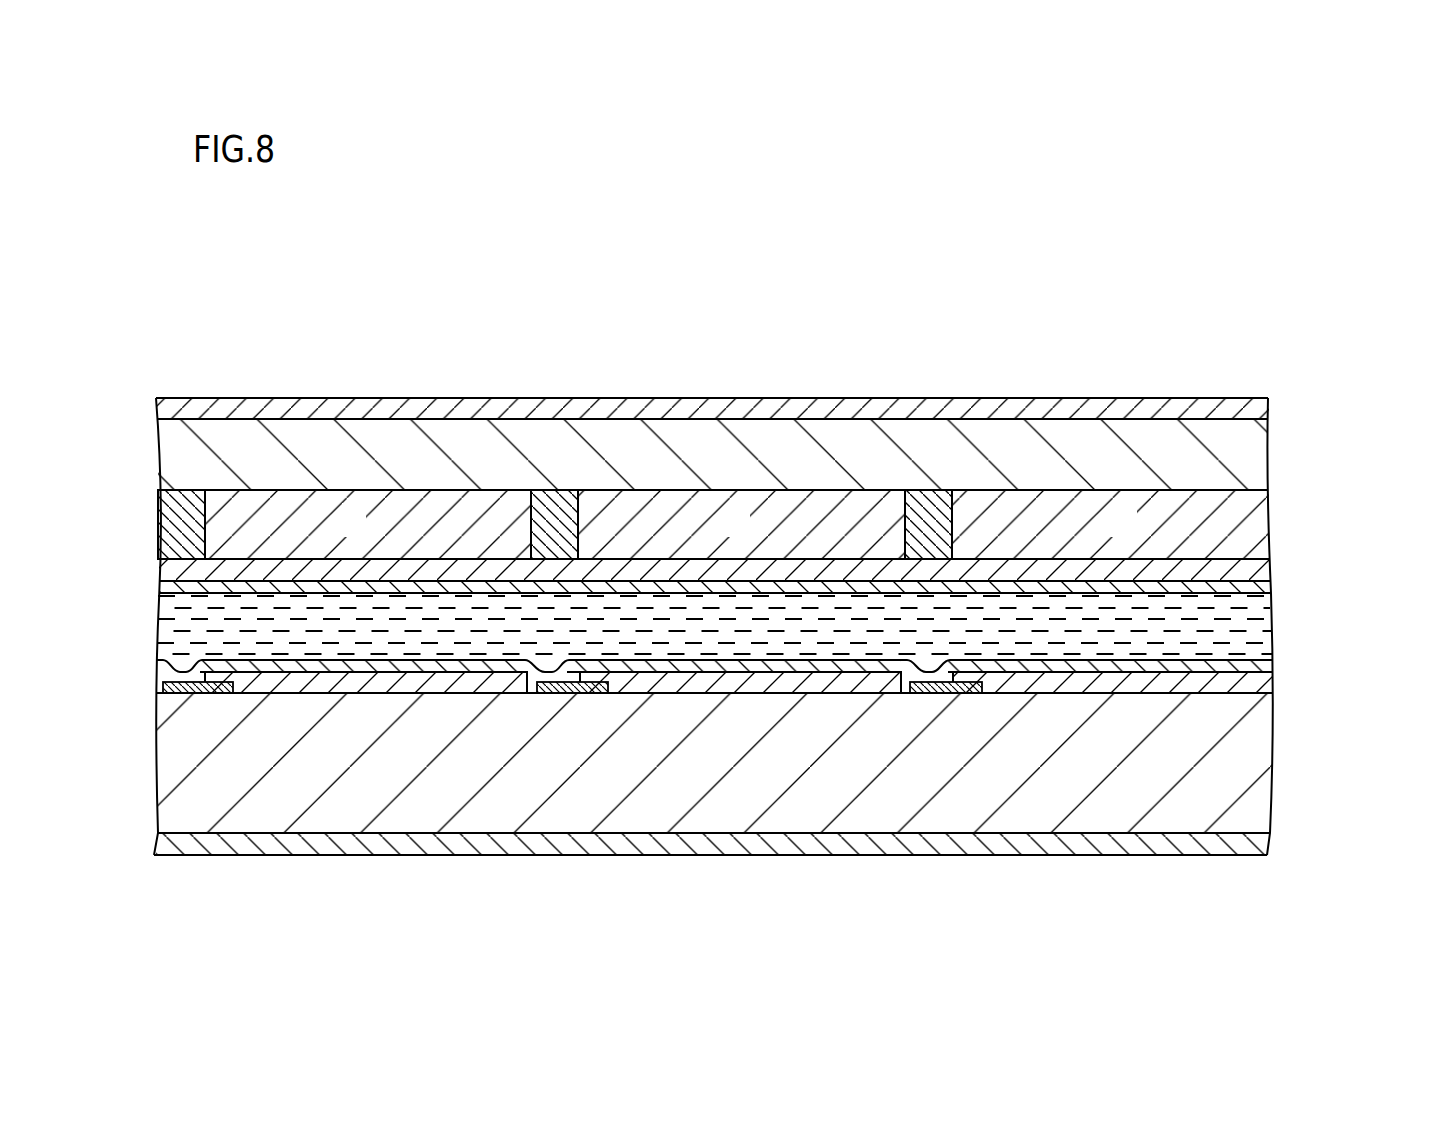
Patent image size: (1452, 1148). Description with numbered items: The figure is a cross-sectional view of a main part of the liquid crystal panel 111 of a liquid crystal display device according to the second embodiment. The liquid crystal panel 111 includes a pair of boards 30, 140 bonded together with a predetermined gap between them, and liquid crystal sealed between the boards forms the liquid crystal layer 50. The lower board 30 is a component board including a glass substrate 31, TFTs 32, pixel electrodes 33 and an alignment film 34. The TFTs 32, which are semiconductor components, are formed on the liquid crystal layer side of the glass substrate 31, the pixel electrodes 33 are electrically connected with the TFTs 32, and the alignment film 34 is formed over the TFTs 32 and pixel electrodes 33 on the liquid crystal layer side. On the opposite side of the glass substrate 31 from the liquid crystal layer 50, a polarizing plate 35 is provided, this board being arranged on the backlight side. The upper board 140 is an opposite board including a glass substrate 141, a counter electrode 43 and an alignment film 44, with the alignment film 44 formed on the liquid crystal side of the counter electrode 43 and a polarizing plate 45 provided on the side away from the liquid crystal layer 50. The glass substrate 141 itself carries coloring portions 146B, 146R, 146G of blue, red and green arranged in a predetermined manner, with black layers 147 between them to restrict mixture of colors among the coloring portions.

The liquid crystal panel 111 is at (1176, 381).
The board 140 is at (1384, 448).
The glass substrate 141 is at (1285, 487).
The polarizing plate 45 is at (1245, 413).
The coloring portion 146B is at (320, 510).
The coloring portion 146R is at (693, 508).
The coloring portion 146G is at (1077, 508).
The black layer 147 is at (555, 510).
The counter electrode 43 is at (1255, 573).
The alignment film 44 is at (1257, 590).
The liquid crystal layer 50 is at (1230, 628).
The board 30 is at (1364, 690).
The alignment film 34 is at (1243, 667).
The pixel electrode 33 is at (1173, 682).
The TFT 32 is at (968, 693).
The glass substrate 31 is at (1248, 808).
The polarizing plate 35 is at (1242, 847).